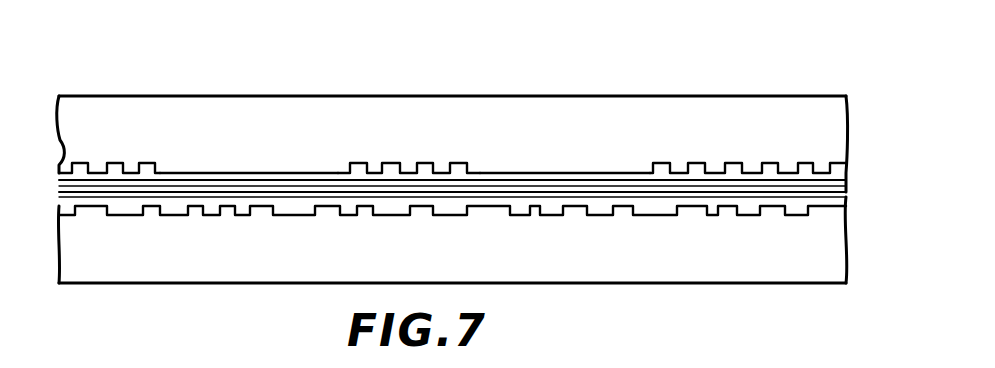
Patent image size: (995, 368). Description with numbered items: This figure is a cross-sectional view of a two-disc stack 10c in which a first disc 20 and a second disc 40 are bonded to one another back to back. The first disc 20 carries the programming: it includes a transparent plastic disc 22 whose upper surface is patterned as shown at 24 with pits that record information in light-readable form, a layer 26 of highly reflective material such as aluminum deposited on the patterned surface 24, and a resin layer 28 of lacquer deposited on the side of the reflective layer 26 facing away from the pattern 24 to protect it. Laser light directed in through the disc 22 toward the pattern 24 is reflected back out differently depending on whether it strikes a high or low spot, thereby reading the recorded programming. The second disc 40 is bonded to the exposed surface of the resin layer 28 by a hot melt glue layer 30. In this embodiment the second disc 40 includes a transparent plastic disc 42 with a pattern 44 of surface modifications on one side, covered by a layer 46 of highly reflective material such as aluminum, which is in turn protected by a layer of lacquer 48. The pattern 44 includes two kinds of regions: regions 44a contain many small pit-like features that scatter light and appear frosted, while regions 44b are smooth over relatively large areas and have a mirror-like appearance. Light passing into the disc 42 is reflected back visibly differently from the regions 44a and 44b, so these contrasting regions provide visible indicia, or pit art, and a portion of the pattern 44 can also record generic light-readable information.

The two-disc stack 10c is at (811, 44).
The first disc 20 is at (858, 195).
The transparent plastic disc 22 is at (87, 272).
The pattern 24 is at (122, 217).
The reflective layer 26 is at (57, 243).
The resin layer 28 is at (60, 210).
The hot melt glue layer 30 is at (831, 197).
The second disc 40 is at (858, 90).
The transparent plastic disc 42 is at (60, 108).
The pattern of surface modifications 44 is at (78, 162).
The regions with many small features 44a is at (158, 84).
The smooth regions 44b is at (333, 84).
The reflective layer 46 is at (60, 173).
The lacquer layer 48 is at (60, 187).